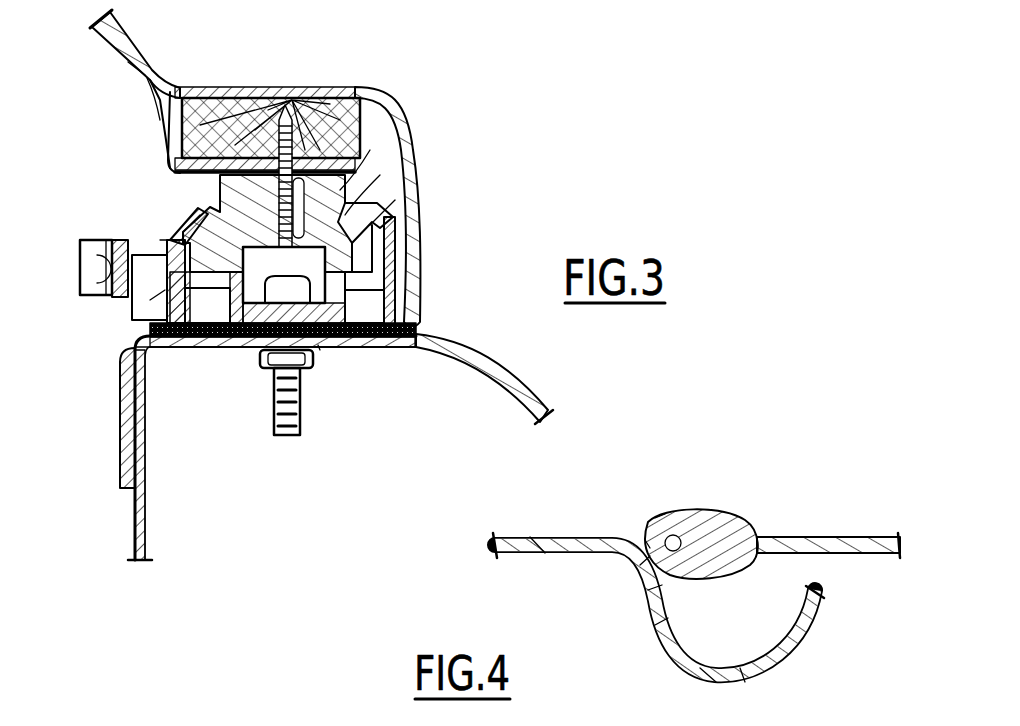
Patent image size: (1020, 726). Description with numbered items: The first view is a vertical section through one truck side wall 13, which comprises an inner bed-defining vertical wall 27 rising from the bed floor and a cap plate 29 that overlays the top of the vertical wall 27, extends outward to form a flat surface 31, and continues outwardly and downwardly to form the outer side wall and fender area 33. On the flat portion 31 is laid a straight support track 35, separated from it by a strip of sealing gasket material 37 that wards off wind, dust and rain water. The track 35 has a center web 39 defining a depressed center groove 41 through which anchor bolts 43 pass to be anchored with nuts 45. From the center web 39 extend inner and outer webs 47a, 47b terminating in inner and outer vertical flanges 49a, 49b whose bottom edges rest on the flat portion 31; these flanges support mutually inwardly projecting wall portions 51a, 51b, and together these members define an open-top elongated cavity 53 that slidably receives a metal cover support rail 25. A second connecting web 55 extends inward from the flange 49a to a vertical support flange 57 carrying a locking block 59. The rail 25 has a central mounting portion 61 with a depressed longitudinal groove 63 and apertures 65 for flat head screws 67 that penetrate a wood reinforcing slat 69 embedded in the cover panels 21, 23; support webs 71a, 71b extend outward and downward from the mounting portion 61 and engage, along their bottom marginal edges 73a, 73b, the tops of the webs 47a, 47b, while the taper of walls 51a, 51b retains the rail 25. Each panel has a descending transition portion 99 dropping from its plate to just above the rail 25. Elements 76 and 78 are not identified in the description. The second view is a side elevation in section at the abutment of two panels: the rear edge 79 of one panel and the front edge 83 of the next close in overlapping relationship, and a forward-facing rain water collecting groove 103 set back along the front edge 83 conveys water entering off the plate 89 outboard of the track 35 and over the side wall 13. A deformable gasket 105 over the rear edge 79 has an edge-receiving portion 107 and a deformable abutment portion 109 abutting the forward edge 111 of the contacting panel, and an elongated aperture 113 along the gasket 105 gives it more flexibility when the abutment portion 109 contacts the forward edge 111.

In FIG. 3, the truck side wall 13 is at (254, 494).
In FIG. 4, the central cover panel 21 is at (545, 548).
In FIG. 3, the rear cover panel 23 is at (115, 25).
In FIG. 3, the cover support rail 25 is at (188, 228).
In FIG. 3, the vertical wall 27 is at (134, 520).
In FIG. 3, the cap plate 29 is at (126, 439).
In FIG. 3, the flat surface 31 is at (185, 320).
In FIG. 3, the outer side wall and fender area 33 is at (500, 368).
In FIG. 3, the support track 35 is at (265, 330).
In FIG. 3, the sealing gasket material 37 is at (416, 327).
In FIG. 3, the center web 39 is at (237, 305).
In FIG. 3, the depressed center groove 41 is at (320, 350).
In FIG. 3, the anchor bolt 43 is at (300, 413).
In FIG. 3, the nut 45 is at (308, 372).
In FIG. 3, the inner web 47a is at (188, 330).
In FIG. 3, the outer web 47b is at (380, 292).
In FIG. 3, the inner vertical flange 49a is at (170, 320).
In FIG. 3, the outer vertical flange 49b is at (393, 250).
In FIG. 3, the inwardly projecting wall portion 51a is at (178, 236).
In FIG. 3, the inwardly projecting wall portion 51b is at (398, 215).
In FIG. 3, the open-top elongated cavity 53 is at (395, 200).
In FIG. 3, the second connecting web 55 is at (152, 290).
In FIG. 3, the vertical support flange 57 is at (118, 297).
In FIG. 3, the locking block 59 is at (80, 268).
In FIG. 3, the central mounting portion 61 is at (380, 175).
In FIG. 3, the depressed longitudinal groove 63 is at (370, 150).
In FIG. 3, the aperture 65 is at (291, 105).
In FIG. 3, the flat head screw 67 is at (262, 192).
In FIG. 3, the wood reinforcing slat 69 is at (356, 92).
In FIG. 3, the support web 71a is at (168, 240).
In FIG. 3, the support web 71b is at (372, 275).
In FIG. 3, the bottom marginal edge 73a is at (158, 300).
In FIG. 3, the bottom marginal edge 73b is at (352, 325).
In FIG. 3, the flange lip 76 is at (128, 62).
In FIG. 3, the outer shell 78 is at (352, 86).
In FIG. 4, the rear edge 79 is at (695, 515).
In FIG. 4, the front edge 83 is at (824, 592).
In FIG. 4, the plate 89 is at (535, 535).
In FIG. 3, the descending transition portion 99 is at (142, 62).
In FIG. 4, the descending transition portion 99 is at (652, 625).
In FIG. 4, the rain water collecting groove 103 is at (713, 650).
In FIG. 4, the deformable gasket 105 is at (648, 528).
In FIG. 4, the edge-receiving portion 107 is at (730, 520).
In FIG. 4, the deformable abutment portion 109 is at (645, 560).
In FIG. 4, the forward edge 111 is at (645, 540).
In FIG. 4, the elongated aperture 113 is at (660, 514).